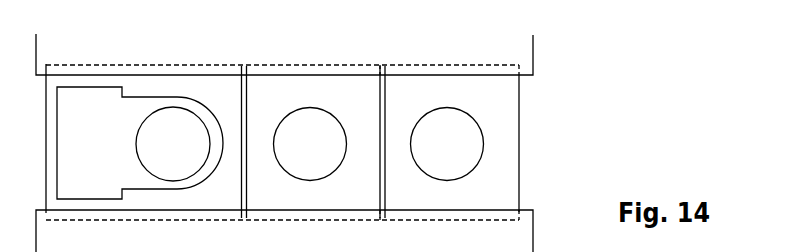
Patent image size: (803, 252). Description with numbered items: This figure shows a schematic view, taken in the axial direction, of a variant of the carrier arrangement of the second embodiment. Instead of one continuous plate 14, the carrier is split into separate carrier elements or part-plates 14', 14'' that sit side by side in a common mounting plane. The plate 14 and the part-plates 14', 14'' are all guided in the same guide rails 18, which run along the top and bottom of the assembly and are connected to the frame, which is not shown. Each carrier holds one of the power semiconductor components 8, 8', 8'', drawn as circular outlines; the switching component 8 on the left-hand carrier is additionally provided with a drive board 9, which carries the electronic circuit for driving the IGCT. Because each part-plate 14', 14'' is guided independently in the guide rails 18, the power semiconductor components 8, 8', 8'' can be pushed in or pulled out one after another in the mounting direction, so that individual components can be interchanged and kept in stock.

The plate 14 is at (146, 121).
The part-plate 14' is at (345, 121).
The part-plate 14'' is at (479, 118).
The power semiconductor component 8 is at (186, 152).
The power semiconductor component 8' is at (321, 154).
The power semiconductor component 8'' is at (460, 154).
The drive board 9 is at (207, 114).
The guide rail 18 is at (534, 52).